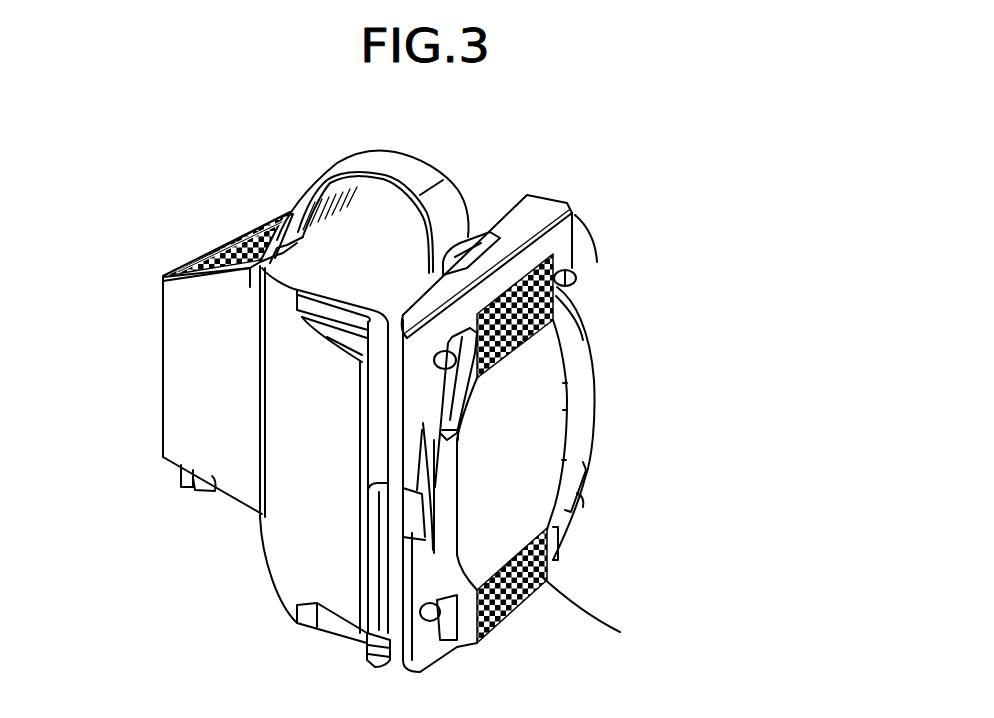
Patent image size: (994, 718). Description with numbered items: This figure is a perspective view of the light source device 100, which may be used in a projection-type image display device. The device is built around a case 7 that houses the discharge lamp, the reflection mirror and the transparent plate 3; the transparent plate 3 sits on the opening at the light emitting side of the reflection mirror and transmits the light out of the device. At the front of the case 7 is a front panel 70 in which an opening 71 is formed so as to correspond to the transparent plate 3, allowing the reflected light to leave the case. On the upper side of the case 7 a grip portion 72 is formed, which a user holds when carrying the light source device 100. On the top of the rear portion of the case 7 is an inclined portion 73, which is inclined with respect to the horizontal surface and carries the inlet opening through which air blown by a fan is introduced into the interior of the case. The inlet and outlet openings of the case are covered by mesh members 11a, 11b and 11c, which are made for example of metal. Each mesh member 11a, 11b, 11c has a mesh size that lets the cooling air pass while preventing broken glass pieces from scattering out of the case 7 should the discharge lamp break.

The light source device 100 is at (520, 170).
The grip portion 72 is at (403, 172).
The mesh member 11a is at (190, 257).
The mesh member 11b is at (567, 262).
The mesh member 11c is at (533, 597).
The inclined portion 73 is at (190, 290).
The front panel 70 is at (583, 358).
The transparent plate 3 is at (525, 423).
The opening 71 is at (565, 433).
The case 7 is at (297, 565).